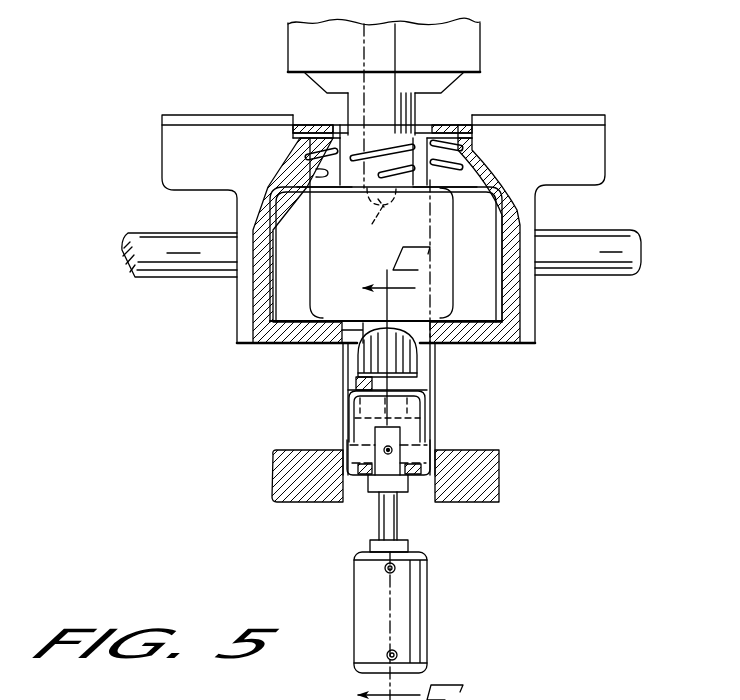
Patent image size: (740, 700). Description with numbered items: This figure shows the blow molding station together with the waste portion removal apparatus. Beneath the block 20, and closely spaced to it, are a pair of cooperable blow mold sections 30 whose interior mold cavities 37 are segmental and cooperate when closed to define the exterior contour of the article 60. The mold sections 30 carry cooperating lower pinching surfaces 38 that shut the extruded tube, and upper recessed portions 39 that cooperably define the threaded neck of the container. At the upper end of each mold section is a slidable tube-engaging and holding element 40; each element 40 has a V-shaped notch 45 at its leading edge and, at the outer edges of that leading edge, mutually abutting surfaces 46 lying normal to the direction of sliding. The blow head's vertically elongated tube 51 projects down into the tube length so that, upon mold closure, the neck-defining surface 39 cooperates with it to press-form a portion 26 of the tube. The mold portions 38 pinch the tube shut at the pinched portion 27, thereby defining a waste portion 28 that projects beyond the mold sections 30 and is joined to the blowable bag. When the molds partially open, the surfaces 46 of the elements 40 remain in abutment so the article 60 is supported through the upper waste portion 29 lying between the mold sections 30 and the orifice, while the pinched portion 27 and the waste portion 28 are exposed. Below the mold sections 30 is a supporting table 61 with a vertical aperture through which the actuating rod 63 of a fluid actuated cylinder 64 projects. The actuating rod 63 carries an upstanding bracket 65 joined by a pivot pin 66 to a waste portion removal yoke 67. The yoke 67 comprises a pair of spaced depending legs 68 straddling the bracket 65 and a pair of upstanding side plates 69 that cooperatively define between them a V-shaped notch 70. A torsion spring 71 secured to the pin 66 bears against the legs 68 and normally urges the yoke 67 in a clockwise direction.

The block 20 is at (492, 38).
The upper waste portion 29 is at (420, 107).
The tube-engaging and holding element 40 is at (462, 112).
The V-shaped notch 45 is at (349, 127).
The mutually abutting surfaces 46 is at (380, 130).
The press-formed portion of the tube 26 is at (363, 145).
The upper recessed portion 39 is at (323, 170).
The lower pinching surfaces 38 is at (330, 327).
The article 60 is at (318, 292).
The vertically elongated tube 51 is at (376, 219).
The interior mold cavities 37 is at (277, 282).
The blow mold sections 30 is at (553, 317).
The pinched portion 27 is at (387, 327).
The waste portion 28 is at (366, 327).
The V-shaped notch 70 is at (373, 388).
The upstanding side plates 69 is at (348, 362).
The waste portion removal yoke 67 is at (440, 377).
The torsion spring 71 is at (430, 400).
The pivot pin 66 is at (430, 447).
The upstanding bracket 65 is at (380, 483).
The depending legs 68 is at (366, 486).
The supporting table 61 is at (487, 463).
The actuating rod 63 is at (402, 532).
The fluid actuated cylinder 64 is at (415, 602).